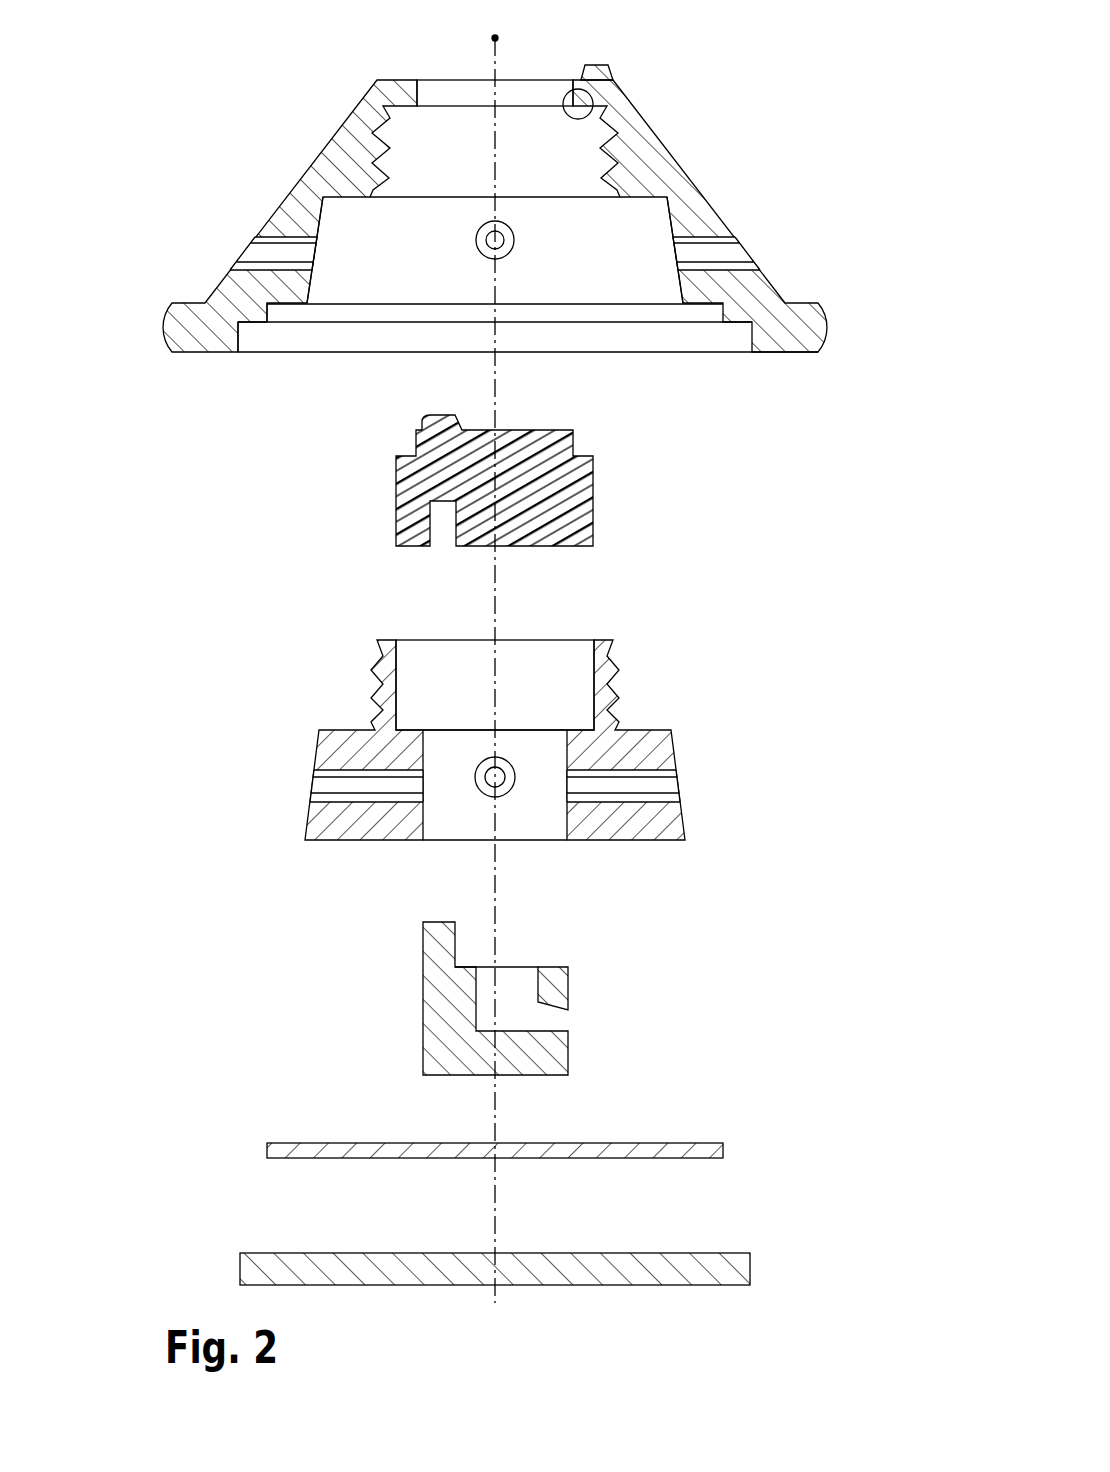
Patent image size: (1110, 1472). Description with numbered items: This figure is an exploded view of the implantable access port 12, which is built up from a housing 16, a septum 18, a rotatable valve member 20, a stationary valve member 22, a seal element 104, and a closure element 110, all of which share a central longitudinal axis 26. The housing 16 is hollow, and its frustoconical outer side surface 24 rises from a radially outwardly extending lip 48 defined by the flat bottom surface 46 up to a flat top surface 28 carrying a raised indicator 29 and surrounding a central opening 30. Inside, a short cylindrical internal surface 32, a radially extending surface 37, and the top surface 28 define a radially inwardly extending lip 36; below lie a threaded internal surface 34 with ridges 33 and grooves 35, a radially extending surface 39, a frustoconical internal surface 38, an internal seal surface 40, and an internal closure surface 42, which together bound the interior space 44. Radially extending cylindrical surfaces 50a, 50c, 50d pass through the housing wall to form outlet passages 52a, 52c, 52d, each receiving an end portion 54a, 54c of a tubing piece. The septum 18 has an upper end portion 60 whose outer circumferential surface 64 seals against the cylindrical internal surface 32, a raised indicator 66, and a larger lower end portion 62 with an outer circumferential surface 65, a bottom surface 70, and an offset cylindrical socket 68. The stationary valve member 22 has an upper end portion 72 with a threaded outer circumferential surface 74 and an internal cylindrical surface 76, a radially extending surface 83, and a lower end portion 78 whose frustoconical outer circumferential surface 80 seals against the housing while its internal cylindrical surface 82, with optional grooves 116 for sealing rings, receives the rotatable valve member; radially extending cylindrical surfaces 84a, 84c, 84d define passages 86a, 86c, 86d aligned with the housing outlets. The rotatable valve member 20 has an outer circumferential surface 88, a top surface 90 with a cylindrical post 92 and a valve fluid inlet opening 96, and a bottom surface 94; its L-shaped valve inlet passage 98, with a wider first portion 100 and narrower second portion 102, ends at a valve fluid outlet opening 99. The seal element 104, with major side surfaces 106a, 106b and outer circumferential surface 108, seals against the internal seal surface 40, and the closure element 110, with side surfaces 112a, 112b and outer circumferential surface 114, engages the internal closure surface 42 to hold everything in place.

The implantable access port 12 is at (98, 455).
The housing 16 is at (710, 199).
The septum 18 is at (597, 514).
The rotatable valve member 20 is at (420, 1056).
The stationary valve member 22 is at (678, 737).
The outer side surface 24 is at (337, 170).
The central longitudinal axis 26 is at (500, 38).
The top surface 28 is at (403, 79).
The raised indicator 29 is at (612, 72).
The central opening 30 is at (558, 80).
The cylindrical internal surface 32 is at (592, 105).
The ridges 33 is at (372, 148).
The threaded internal surface 34 is at (615, 125).
The grooves 35 is at (362, 110).
The radially inwardly extending lip 36 is at (393, 95).
The radially extending surface 37 is at (405, 106).
The frustoconical internal surface 38 is at (317, 200).
The radially extending surface 39 is at (368, 192).
The internal seal surface 40 is at (280, 318).
The internal closure surface 42 is at (240, 340).
The interior space 44 is at (510, 165).
The flat bottom surface 46 is at (768, 353).
The radially outwardly extending lip 48 is at (825, 324).
The radially extending cylindrical surface 50a is at (735, 263).
The radially extending cylindrical surface 50c is at (252, 240).
The radially extending cylindrical surface 50d is at (505, 252).
The outlet passage 52a is at (690, 252).
The outlet passage 52c is at (315, 253).
The outlet passage 52d is at (503, 240).
The end portion of tubing 54a is at (733, 237).
The end portion of tubing 54c is at (270, 265).
The upper end portion 60 is at (577, 445).
The lower end portion 62 is at (595, 528).
The outer circumferential surface 64 is at (416, 442).
The outer circumferential surface 65 is at (396, 488).
The raised indicator 66 is at (443, 417).
The cylindrical socket 68 is at (437, 533).
The bottom surface 70 is at (527, 547).
The upper end portion 72 is at (383, 667).
The outer circumferential surface 74 is at (375, 682).
The internal cylindrical surface 76 is at (597, 660).
The lower end portion 78 is at (322, 745).
The frustoconical outer circumferential surface 80 is at (306, 833).
The internal cylindrical surface 82 is at (430, 843).
The radially extending surface 83 is at (413, 730).
The radially extending cylindrical surface 84a is at (698, 796).
The radially extending cylindrical surface 84c is at (352, 800).
The radially extending cylindrical surface 84d is at (505, 762).
The passage 86a is at (575, 783).
The passage 86c is at (424, 786).
The passage 86d is at (503, 797).
The outer circumferential surface 88 is at (422, 1020).
The top surface 90 is at (557, 968).
The cylindrical post 92 is at (440, 943).
The bottom surface 94 is at (447, 1077).
The valve fluid inlet opening 96 is at (525, 966).
The valve inlet passage 98 is at (502, 1005).
The valve fluid outlet opening 99 is at (567, 1010).
The first portion of valve inlet passage 100 is at (487, 988).
The second portion of valve inlet passage 102 is at (556, 1020).
The seal element 104 is at (676, 1140).
The upper major side surface 106a is at (610, 1142).
The lower major side surface 106b is at (560, 1159).
The outer circumferential surface 108 is at (724, 1150).
The closure element 110 is at (661, 1289).
The upper major side surface 112a is at (384, 1253).
The lower major side surface 112b is at (403, 1287).
The outer circumferential surface 114 is at (753, 1268).
The grooves 116 is at (423, 748).